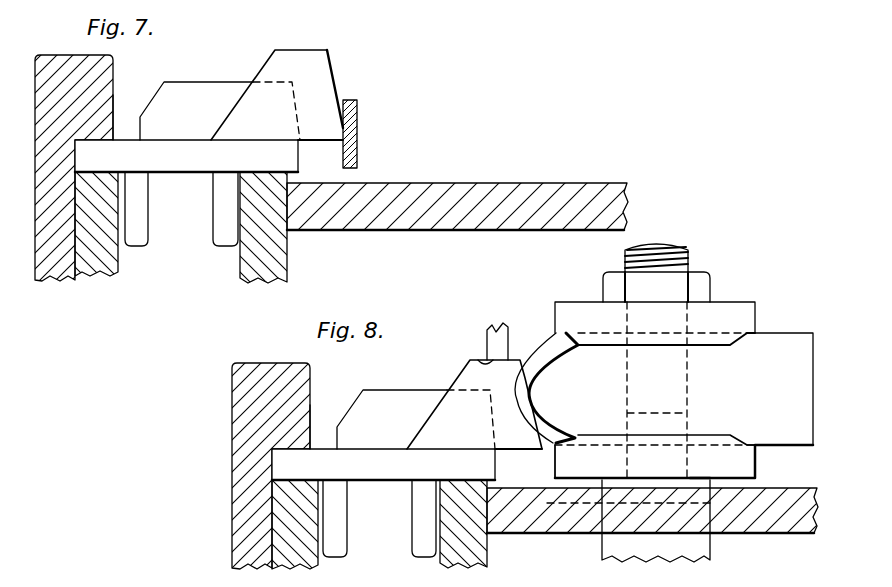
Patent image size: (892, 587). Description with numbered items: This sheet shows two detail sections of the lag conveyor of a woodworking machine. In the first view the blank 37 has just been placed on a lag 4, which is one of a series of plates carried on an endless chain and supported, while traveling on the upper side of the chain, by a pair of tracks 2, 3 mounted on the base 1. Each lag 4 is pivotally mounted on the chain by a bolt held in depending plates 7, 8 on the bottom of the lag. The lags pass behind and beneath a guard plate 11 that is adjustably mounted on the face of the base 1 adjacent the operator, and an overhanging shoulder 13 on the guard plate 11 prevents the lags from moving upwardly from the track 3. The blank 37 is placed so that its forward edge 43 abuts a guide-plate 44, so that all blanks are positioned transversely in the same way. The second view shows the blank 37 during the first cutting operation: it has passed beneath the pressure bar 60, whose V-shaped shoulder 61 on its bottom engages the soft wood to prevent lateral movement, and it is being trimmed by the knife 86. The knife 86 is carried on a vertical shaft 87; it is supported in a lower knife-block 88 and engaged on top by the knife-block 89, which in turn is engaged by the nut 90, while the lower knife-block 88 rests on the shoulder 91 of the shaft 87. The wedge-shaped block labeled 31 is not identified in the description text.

In FIG. 7, the base 1 is at (420, 160).
In FIG. 8, the base 1 is at (795, 520).
In FIG. 7, the track 2 is at (110, 268).
In FIG. 8, the track 2 is at (278, 507).
In FIG. 7, the track 3 is at (247, 272).
In FIG. 8, the track 3 is at (448, 560).
In FIG. 7, the lag 4 is at (163, 148).
In FIG. 8, the lag 4 is at (350, 457).
In FIG. 7, the depending plate 7 is at (146, 246).
In FIG. 8, the depending plate 7 is at (340, 538).
In FIG. 7, the depending plate 8 is at (228, 246).
In FIG. 8, the depending plate 8 is at (412, 540).
In FIG. 7, the guard plate 11 is at (52, 58).
In FIG. 8, the guard plate 11 is at (240, 395).
In FIG. 7, the overhanging shoulder 13 is at (113, 100).
In FIG. 8, the overhanging shoulder 13 is at (313, 430).
In FIG. 7, the wedge block 31 is at (200, 88).
In FIG. 8, the wedge block 31 is at (405, 398).
In FIG. 7, the blank 37 is at (313, 55).
In FIG. 8, the blank 37 is at (468, 365).
In FIG. 7, the forward edge 43 is at (342, 145).
In FIG. 7, the guide-plate 44 is at (358, 132).
In FIG. 8, the pressure bar 60 is at (500, 325).
In FIG. 8, the V-shaped shoulder 61 is at (478, 358).
In FIG. 8, the knife 86 is at (547, 358).
In FIG. 8, the vertical shaft 87 is at (678, 246).
In FIG. 8, the lower knife-block 88 is at (597, 462).
In FIG. 8, the knife-block 89 is at (733, 307).
In FIG. 8, the nut 90 is at (710, 284).
In FIG. 8, the shoulder 91 is at (698, 479).